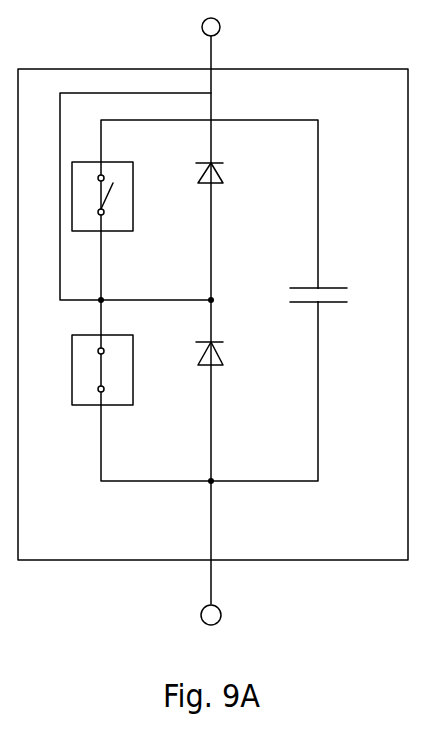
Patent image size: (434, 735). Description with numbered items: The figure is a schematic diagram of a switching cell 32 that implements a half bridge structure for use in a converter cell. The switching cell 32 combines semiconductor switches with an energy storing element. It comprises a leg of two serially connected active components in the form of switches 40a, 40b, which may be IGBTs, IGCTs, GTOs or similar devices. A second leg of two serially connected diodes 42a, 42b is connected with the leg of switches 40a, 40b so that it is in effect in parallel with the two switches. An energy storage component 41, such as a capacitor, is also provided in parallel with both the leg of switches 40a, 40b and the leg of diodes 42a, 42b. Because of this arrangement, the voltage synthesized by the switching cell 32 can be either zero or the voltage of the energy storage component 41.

The switching cell 32 is at (308, 85).
The switch 40a is at (133, 197).
The switch 40b is at (133, 369).
The energy storage component 41 is at (337, 304).
The diode 42a is at (219, 173).
The diode 42b is at (218, 353).